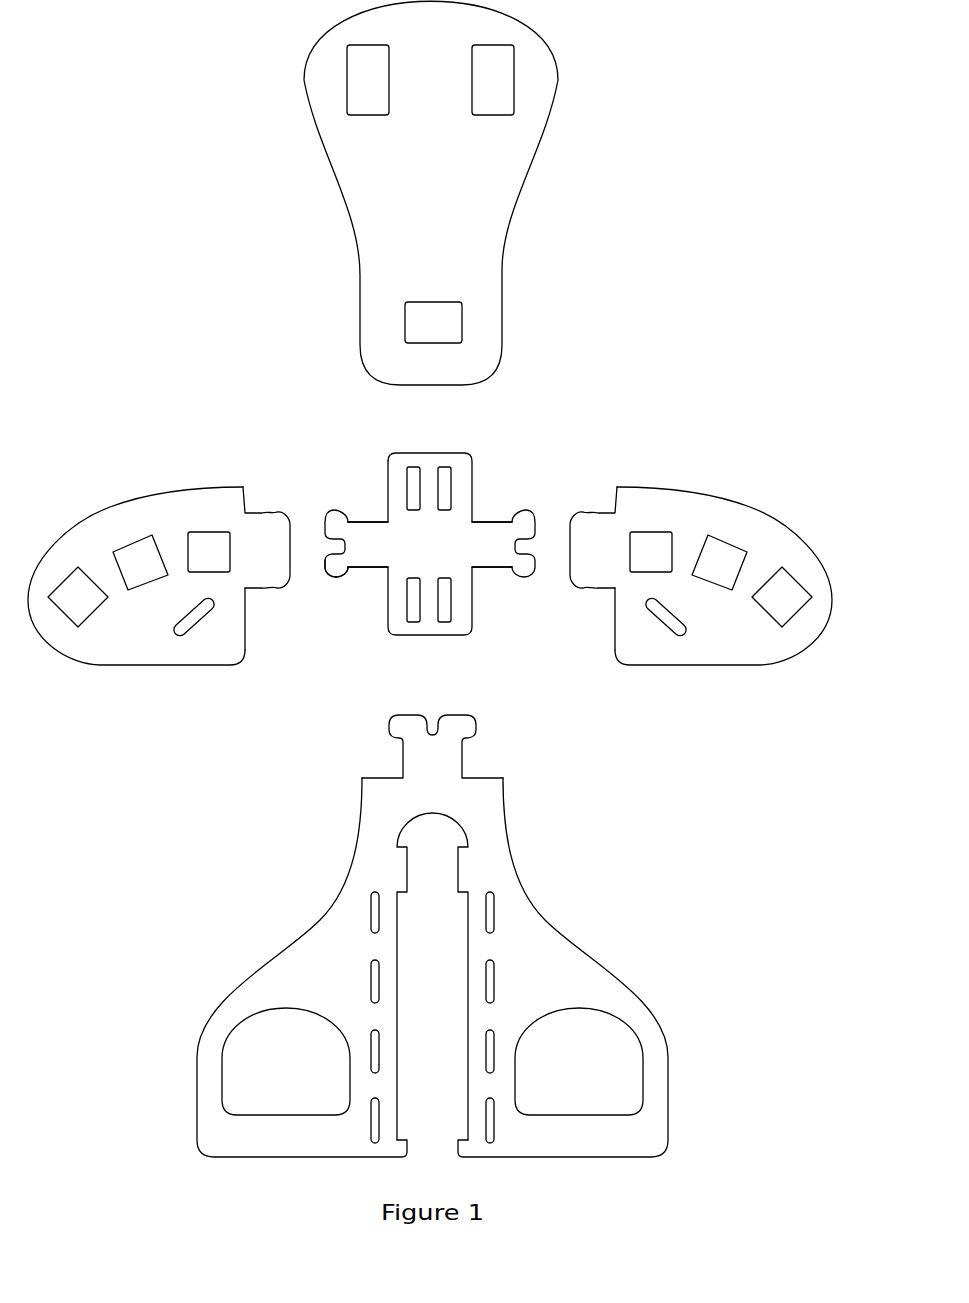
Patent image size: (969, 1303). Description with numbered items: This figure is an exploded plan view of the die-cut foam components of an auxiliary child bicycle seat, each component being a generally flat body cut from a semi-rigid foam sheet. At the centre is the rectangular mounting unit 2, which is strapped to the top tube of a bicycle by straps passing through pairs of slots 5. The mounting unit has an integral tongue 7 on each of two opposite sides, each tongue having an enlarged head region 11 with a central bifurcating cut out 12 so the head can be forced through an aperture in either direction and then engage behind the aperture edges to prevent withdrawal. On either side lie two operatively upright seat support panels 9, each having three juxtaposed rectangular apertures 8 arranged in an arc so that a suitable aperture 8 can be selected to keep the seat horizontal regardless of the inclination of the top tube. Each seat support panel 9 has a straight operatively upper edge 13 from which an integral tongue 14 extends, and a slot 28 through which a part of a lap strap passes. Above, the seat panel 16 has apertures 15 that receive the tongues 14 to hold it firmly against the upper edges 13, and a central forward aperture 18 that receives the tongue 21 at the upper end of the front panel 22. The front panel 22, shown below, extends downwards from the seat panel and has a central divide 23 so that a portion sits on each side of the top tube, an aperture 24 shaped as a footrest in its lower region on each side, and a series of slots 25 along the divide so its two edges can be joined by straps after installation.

The mounting unit 2 is at (363, 517).
The slots 5 is at (443, 492).
The tongue 7 is at (370, 535).
The aperture 8 is at (213, 548).
The seat support panel 9 is at (159, 555).
The enlarged head region 11 is at (330, 572).
The central bifurcating cut out 12 is at (335, 545).
The operatively upper edge 13 is at (243, 622).
The tongue 14 is at (270, 550).
The apertures 15 is at (493, 102).
The seat panel 16 is at (423, 173).
The central forward aperture 18 is at (424, 323).
The tongue 21 is at (427, 757).
The front panel 22 is at (429, 963).
The central divide 23 is at (425, 950).
The aperture 24 is at (283, 1068).
The slots 25 is at (372, 1120).
The slot 28 is at (180, 635).